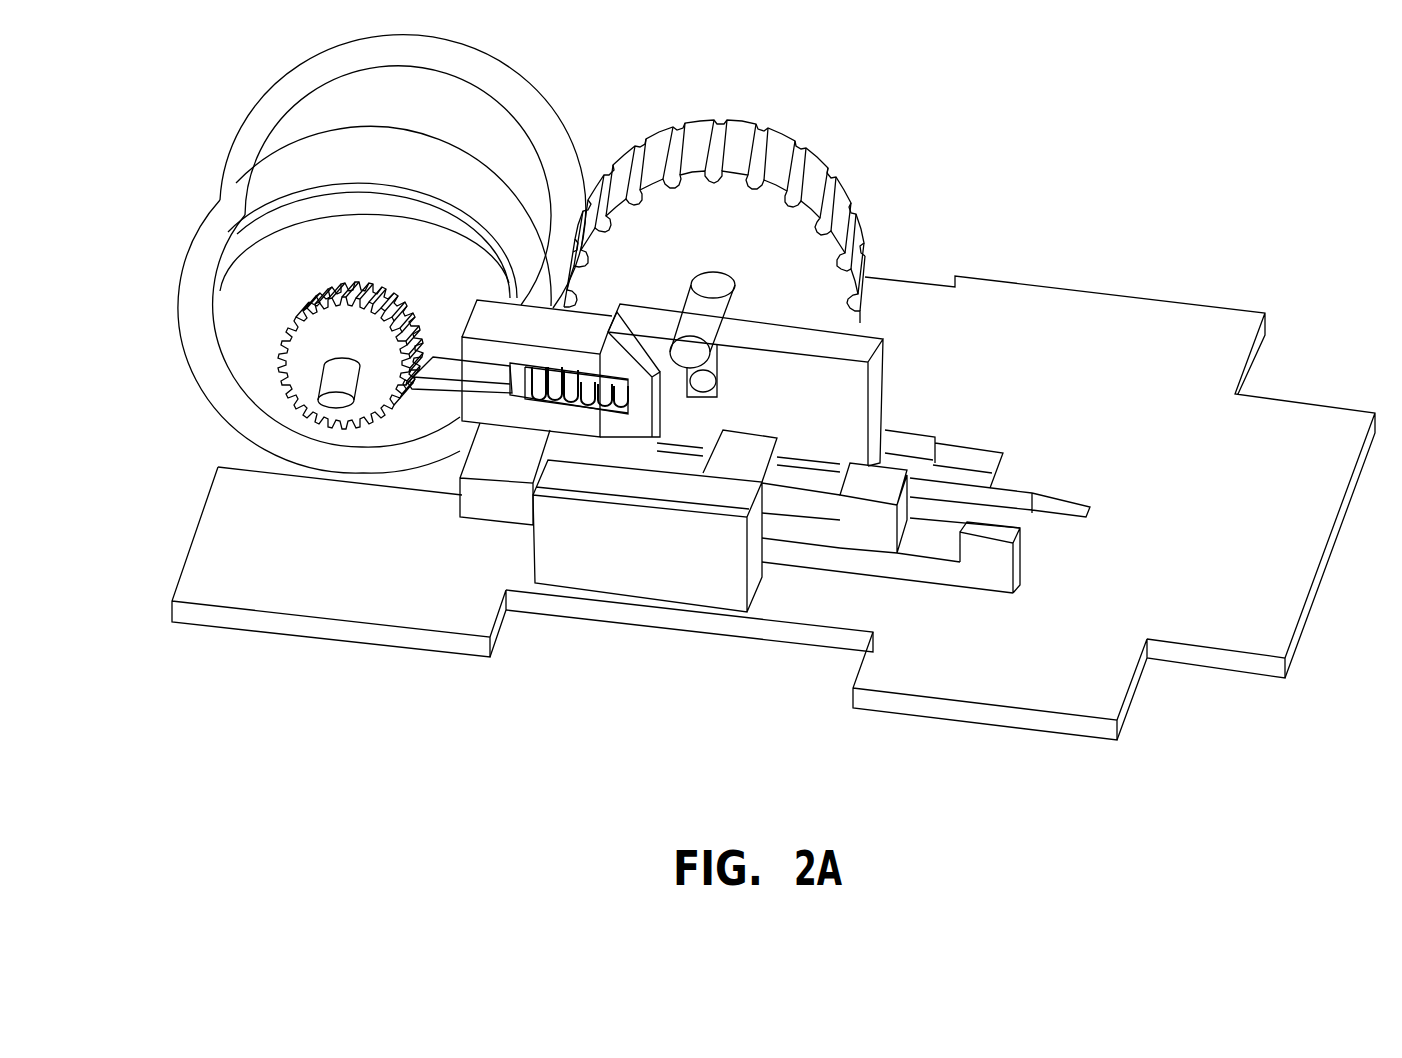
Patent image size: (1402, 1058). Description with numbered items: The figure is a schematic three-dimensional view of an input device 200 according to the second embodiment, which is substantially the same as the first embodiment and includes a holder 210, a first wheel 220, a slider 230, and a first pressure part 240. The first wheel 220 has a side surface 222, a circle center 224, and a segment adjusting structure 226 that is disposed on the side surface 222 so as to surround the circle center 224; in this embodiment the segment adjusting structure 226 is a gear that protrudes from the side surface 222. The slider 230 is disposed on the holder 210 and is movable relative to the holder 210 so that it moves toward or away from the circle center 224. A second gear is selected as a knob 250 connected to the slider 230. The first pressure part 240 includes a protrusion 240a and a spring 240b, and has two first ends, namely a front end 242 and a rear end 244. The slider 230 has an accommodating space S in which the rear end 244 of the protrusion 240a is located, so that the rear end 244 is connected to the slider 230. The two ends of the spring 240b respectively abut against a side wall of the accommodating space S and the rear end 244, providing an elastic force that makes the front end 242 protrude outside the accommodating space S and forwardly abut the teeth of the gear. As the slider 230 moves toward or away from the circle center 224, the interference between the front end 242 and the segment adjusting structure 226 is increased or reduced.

The input device 200 is at (1220, 110).
The holder 210 is at (1025, 655).
The first wheel 220 is at (382, 240).
The side surface 222 is at (263, 268).
The circle center 224 is at (338, 372).
The segment adjusting structure 226 is at (375, 312).
The slider 230 is at (812, 432).
The first pressure part 240 is at (592, 441).
The protrusion 240a is at (458, 390).
The spring 240b is at (583, 410).
The front end 242 is at (408, 384).
The rear end 244 is at (520, 400).
The knob 250 is at (823, 172).
The accommodating space S is at (559, 368).